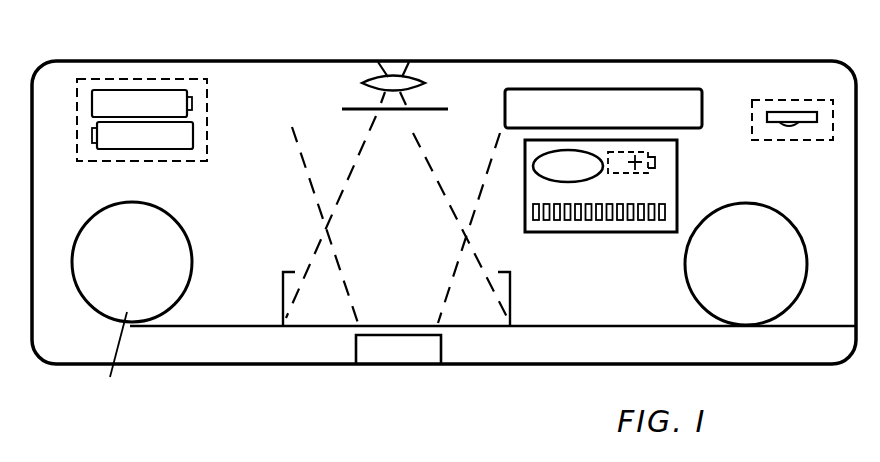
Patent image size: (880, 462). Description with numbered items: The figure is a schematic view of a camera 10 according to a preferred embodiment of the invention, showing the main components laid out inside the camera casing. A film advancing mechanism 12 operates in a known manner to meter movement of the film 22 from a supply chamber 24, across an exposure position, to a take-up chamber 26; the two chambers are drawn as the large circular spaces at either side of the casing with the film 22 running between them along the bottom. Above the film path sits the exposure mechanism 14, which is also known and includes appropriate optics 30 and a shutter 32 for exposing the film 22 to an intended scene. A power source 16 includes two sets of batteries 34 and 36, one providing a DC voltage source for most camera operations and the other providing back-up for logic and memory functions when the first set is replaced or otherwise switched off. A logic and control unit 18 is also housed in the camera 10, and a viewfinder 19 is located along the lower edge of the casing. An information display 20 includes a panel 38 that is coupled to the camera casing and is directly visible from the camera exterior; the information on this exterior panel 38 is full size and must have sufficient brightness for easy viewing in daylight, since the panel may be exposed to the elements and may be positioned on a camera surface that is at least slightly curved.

The camera 10 is at (214, 381).
The film advancing mechanism 12 is at (209, 266).
The exposure mechanism 14 is at (320, 95).
The power source 16 is at (120, 67).
The logic and control unit 18 is at (625, 87).
The viewfinder 19 is at (420, 376).
The information display 20 is at (601, 240).
The film 22 is at (237, 323).
The supply chamber 24 is at (773, 223).
The take-up chamber 26 is at (109, 362).
The optics 30 is at (409, 82).
The shutter 32 is at (431, 108).
The first set of batteries 34 is at (153, 98).
The second set of batteries 36 is at (790, 112).
The panel 38 is at (677, 186).